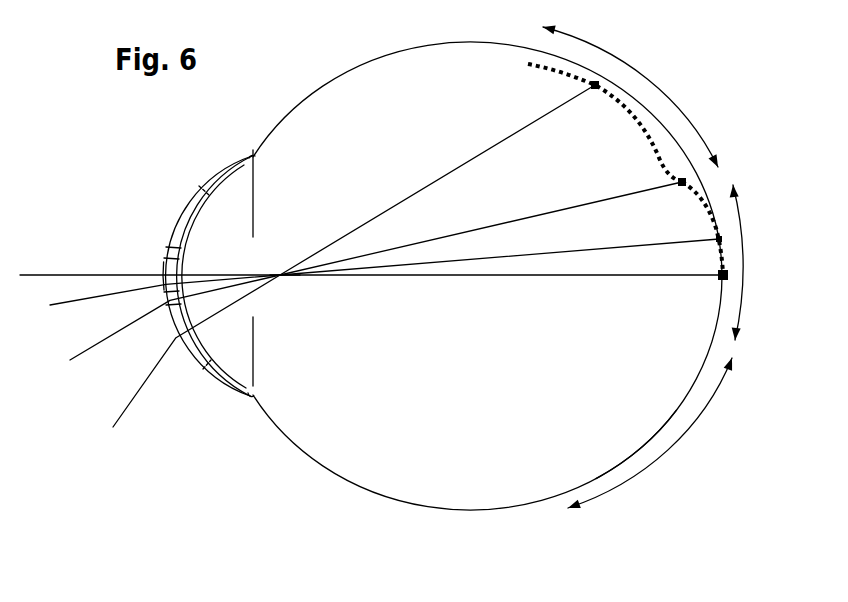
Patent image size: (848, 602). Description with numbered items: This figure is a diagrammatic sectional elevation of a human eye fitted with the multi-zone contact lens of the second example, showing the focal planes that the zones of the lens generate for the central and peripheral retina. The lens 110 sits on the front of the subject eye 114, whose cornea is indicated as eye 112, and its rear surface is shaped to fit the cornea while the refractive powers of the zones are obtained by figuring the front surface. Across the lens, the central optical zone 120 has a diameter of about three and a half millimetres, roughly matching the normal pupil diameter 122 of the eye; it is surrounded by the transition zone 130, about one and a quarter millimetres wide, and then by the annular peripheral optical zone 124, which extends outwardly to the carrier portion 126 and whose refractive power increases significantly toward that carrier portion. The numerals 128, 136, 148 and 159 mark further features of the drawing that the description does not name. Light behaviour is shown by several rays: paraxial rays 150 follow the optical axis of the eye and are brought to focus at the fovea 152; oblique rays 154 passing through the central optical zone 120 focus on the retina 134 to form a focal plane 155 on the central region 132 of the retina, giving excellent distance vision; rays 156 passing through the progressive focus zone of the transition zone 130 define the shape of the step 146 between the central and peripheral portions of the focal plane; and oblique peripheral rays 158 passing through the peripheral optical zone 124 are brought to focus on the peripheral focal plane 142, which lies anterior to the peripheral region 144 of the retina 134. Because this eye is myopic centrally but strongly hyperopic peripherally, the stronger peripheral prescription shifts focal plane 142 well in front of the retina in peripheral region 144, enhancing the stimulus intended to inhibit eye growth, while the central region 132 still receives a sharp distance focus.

The lens 110 is at (181, 162).
The eye 112 is at (233, 184).
The subject eye 114 is at (346, 50).
The central optical zone 120 is at (170, 268).
The normal pupil diameter 122 is at (260, 257).
The peripheral optical zone 124 is at (188, 209).
The carrier portion 126 is at (224, 170).
The anterior surface layer of lens 128 is at (252, 150).
The transition zone 130 is at (166, 248).
The central region of the retina 132 is at (743, 283).
The retina 134 is at (637, 448).
The lens axis reference line (lower) 136 is at (255, 347).
The peripheral focal plane 142 is at (648, 155).
The peripheral region of the retina 144 is at (643, 70).
The step 146 is at (688, 179).
The nodal point of eye 148 is at (315, 280).
The paraxial rays 150 is at (47, 275).
The fovea 152 is at (718, 279).
The oblique rays 154 is at (103, 304).
The focal plane 155 is at (715, 218).
The rays 156 is at (80, 357).
The oblique peripheral rays 158 is at (120, 425).
The far peripheral image point 159 is at (592, 85).